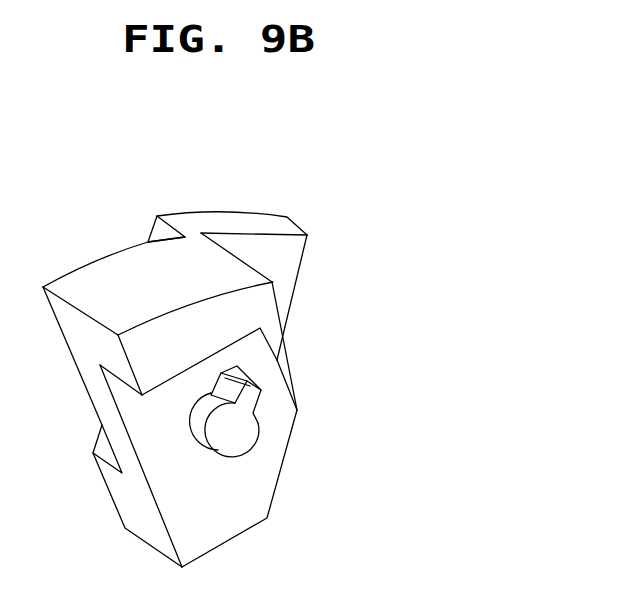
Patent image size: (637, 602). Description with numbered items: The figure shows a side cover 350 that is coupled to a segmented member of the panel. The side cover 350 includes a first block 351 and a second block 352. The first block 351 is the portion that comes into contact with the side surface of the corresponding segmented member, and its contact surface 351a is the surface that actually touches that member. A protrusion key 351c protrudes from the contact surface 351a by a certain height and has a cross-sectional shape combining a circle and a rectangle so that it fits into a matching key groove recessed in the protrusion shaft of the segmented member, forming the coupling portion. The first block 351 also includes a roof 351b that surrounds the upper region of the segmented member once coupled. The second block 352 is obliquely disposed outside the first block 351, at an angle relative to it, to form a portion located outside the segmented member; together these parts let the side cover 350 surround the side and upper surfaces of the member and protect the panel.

The side cover 350 is at (235, 198).
The first block 351 is at (130, 272).
The contact surface 351a is at (255, 483).
The roof 351b is at (258, 313).
The protrusion key 351c is at (243, 427).
The second block 352 is at (293, 262).